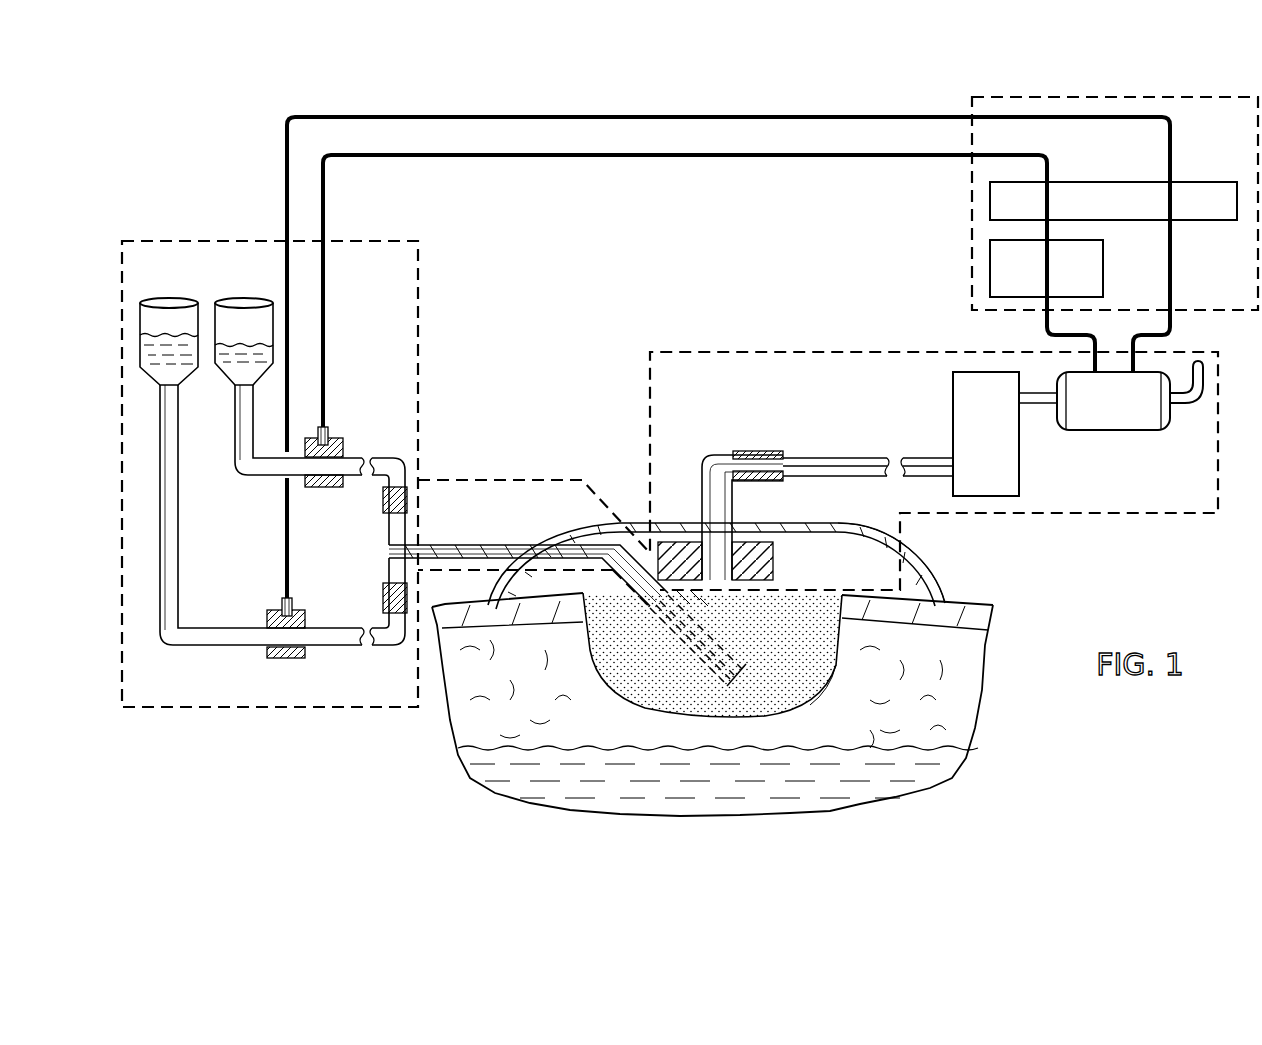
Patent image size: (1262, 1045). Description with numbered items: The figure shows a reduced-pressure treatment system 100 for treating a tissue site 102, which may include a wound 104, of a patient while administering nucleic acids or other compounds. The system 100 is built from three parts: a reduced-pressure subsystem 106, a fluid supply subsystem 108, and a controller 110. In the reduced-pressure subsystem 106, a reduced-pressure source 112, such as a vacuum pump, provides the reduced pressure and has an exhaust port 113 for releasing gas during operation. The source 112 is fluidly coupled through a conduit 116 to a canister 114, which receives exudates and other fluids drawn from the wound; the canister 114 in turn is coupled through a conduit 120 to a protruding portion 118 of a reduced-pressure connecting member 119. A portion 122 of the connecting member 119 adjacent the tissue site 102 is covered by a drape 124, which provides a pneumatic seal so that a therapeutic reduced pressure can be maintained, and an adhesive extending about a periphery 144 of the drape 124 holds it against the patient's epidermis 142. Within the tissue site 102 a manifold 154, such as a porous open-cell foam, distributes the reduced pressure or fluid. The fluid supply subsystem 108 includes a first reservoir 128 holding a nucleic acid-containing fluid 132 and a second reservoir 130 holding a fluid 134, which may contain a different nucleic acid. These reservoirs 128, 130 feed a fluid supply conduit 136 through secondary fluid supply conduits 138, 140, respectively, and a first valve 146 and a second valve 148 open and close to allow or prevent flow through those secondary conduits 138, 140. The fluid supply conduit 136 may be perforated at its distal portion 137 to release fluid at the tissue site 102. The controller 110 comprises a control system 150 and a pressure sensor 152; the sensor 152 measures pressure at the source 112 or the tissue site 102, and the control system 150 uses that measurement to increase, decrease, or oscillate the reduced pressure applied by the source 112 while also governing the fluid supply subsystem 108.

The reduced-pressure treatment system 100 is at (547, 86).
The tissue site 102 is at (790, 714).
The wound 104 is at (587, 680).
The reduced-pressure subsystem 106 is at (803, 351).
The fluid supply subsystem 108 is at (235, 239).
The controller 110 is at (1138, 95).
The reduced-pressure source 112 is at (1113, 431).
The exhaust port 113 is at (1178, 404).
The canister 114 is at (970, 448).
The conduit 116 is at (1033, 405).
The protruding portion 118 is at (760, 451).
The reduced-pressure connecting member 119 is at (690, 544).
The conduit 120 is at (930, 457).
The portion of the reduced-pressure connecting member 122 is at (776, 570).
The drape 124 is at (873, 524).
The first reservoir 128 is at (164, 300).
The second reservoir 130 is at (239, 300).
The nucleic acid-containing fluid 132 is at (177, 334).
The fluid 134 is at (232, 372).
The fluid supply conduit 136 is at (473, 545).
The distal portion 137 is at (676, 648).
The secondary fluid supply conduit 138 is at (262, 478).
The secondary fluid supply conduit 140 is at (218, 648).
The epidermis 142 is at (978, 605).
The periphery 144 is at (918, 560).
The first valve 146 is at (265, 618).
The second valve 148 is at (345, 447).
The control system 150 is at (1113, 181).
The pressure sensor 152 is at (1106, 268).
The manifold 154 is at (832, 680).